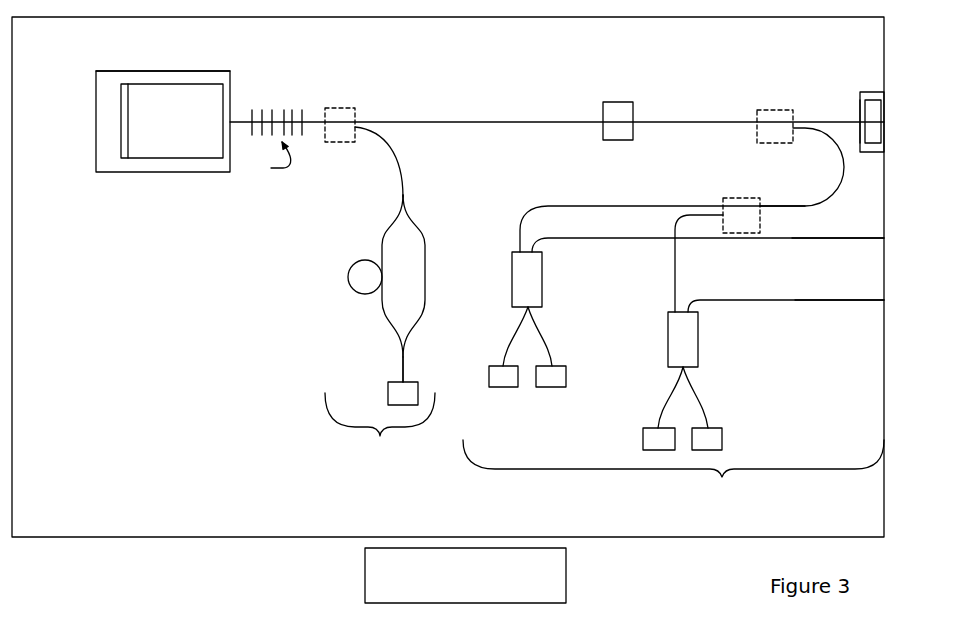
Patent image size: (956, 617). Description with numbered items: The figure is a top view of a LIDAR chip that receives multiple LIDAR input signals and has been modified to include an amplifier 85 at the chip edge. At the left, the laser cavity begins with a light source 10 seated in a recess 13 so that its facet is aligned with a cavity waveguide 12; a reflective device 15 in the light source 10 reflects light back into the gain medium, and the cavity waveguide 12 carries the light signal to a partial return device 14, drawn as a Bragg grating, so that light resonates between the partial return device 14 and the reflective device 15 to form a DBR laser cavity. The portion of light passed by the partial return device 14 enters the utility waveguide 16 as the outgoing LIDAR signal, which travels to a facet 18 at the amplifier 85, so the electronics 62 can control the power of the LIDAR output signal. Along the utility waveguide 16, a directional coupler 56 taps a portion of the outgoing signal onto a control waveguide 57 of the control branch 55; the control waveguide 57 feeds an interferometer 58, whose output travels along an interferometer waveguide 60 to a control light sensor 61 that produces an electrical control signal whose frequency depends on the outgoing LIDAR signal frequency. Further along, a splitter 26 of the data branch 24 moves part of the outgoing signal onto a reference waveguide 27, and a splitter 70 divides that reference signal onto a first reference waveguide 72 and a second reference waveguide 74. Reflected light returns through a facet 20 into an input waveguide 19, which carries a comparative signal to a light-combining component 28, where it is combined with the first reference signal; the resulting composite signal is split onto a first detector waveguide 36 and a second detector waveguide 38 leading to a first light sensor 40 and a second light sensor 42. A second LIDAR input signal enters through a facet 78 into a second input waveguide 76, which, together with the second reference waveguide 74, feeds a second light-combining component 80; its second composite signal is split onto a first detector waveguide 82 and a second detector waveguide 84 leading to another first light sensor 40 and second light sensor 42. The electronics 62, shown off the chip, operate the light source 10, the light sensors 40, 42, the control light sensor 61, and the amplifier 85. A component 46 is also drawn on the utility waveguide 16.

The light source 10 is at (160, 158).
The cavity waveguide 12 is at (239, 119).
The recess 13 is at (163, 70).
The partial return device 14 is at (266, 161).
The reflective device 15 is at (121, 120).
The utility waveguide 16 is at (407, 120).
The facet 18 is at (884, 122).
The input waveguide 19 is at (792, 239).
The facet 20 is at (885, 238).
The data branch 24 is at (673, 474).
The splitter 26 is at (778, 108).
The reference waveguide 27 is at (808, 204).
The light-combining component 28 is at (542, 260).
The first detector waveguide 36 is at (508, 340).
The second detector waveguide 38 is at (545, 340).
The first light sensor 40 is at (490, 366).
The second light sensor 42 is at (568, 366).
The coupler 46 is at (603, 110).
The control branch 55 is at (380, 328).
The directional coupler 56 is at (343, 108).
The control waveguide 57 is at (388, 143).
The interferometer 58 is at (342, 260).
The interferometer waveguide 60 is at (402, 372).
The control light sensor 61 is at (388, 398).
The electronics 62 is at (365, 573).
The splitter 70 is at (641, 205).
The first reference waveguide 72 is at (733, 198).
The second reference waveguide 74 is at (672, 285).
The second input waveguide 76 is at (795, 300).
The facet 78 is at (885, 300).
The second light-combining component 80 is at (698, 320).
The first detector waveguide 82 is at (665, 400).
The second detector waveguide 84 is at (703, 405).
The amplifier 85 is at (860, 110).